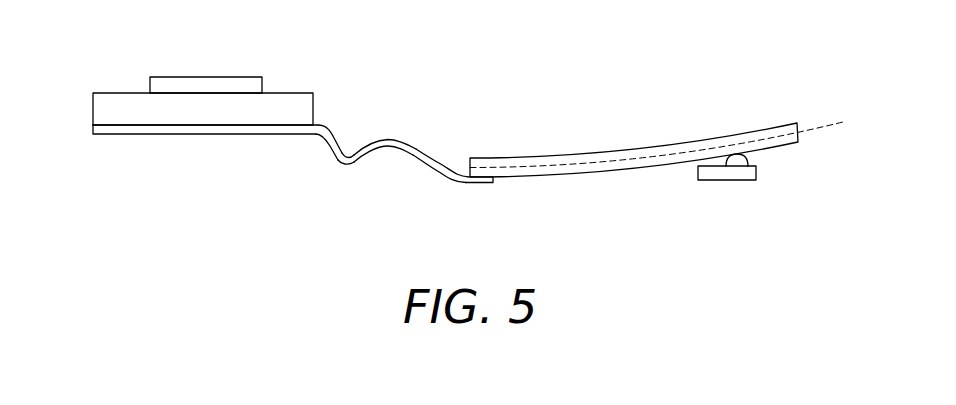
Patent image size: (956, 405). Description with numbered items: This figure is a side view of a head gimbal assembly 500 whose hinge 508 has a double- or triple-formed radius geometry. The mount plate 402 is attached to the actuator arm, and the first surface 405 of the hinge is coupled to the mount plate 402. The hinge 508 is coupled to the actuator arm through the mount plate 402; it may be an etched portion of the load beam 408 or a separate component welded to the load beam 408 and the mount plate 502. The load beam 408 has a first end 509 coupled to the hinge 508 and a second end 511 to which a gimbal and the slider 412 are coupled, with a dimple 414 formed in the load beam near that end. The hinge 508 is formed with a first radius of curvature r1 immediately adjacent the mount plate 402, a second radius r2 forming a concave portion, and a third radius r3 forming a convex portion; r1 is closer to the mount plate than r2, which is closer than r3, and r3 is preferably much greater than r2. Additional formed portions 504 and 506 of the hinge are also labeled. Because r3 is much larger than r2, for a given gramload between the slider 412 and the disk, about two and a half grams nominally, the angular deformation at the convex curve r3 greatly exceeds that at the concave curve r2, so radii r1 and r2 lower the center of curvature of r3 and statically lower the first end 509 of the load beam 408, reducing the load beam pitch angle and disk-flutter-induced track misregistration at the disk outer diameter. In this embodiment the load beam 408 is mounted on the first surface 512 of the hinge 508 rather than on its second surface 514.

The mount plate 402 is at (113, 105).
The first surface 405 is at (205, 82).
The load beam 408 is at (590, 157).
The slider 412 is at (723, 173).
The dimple 414 is at (746, 157).
The HGA 500 is at (126, 206).
The mount plate 502 is at (325, 125).
The second bend 504 is at (347, 166).
The third bend 506 is at (393, 138).
The hinge 508 is at (233, 128).
The first end of the load beam 509 is at (485, 198).
The second end of the load beam 511 is at (776, 106).
The first surface of the hinge 512 is at (443, 165).
The second surface of the hinge 514 is at (441, 173).
The first radius of curvature r1 is at (317, 144).
The second radius of curvature r2 is at (350, 148).
The third radius of curvature r3 is at (391, 156).